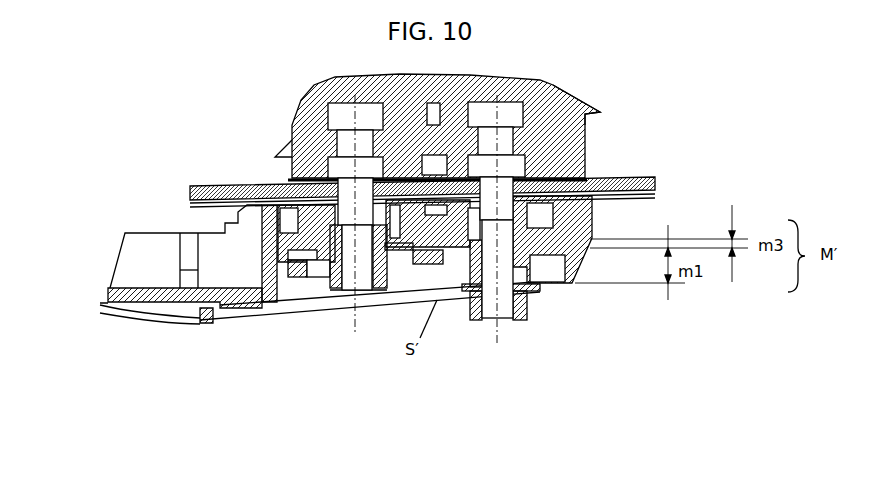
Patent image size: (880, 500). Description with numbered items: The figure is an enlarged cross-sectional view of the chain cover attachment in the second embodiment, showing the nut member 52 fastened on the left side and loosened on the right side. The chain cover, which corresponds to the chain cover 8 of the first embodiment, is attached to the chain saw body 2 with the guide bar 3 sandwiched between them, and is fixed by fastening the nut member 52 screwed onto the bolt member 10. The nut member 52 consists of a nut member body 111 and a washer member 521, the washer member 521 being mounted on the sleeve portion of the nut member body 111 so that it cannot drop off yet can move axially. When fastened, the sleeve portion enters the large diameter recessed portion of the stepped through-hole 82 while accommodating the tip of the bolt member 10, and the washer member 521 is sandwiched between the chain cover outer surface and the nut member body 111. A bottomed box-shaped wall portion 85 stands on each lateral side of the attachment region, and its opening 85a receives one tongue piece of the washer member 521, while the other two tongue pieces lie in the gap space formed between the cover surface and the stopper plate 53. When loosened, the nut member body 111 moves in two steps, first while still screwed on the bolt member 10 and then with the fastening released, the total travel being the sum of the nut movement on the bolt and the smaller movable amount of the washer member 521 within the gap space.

The chain saw body 2 is at (292, 138).
The guide bar 3 is at (596, 182).
The chain cover 8 is at (188, 303).
The bolt member 10 is at (355, 290).
The nut member 52 is at (372, 298).
The stopper plate 53 is at (425, 272).
The stepped through-hole 82 is at (285, 197).
The bottomed box-shaped wall portion 85 is at (298, 270).
The opening 85a is at (258, 250).
The nut member body 111 is at (310, 225).
The washer member 521 is at (583, 256).